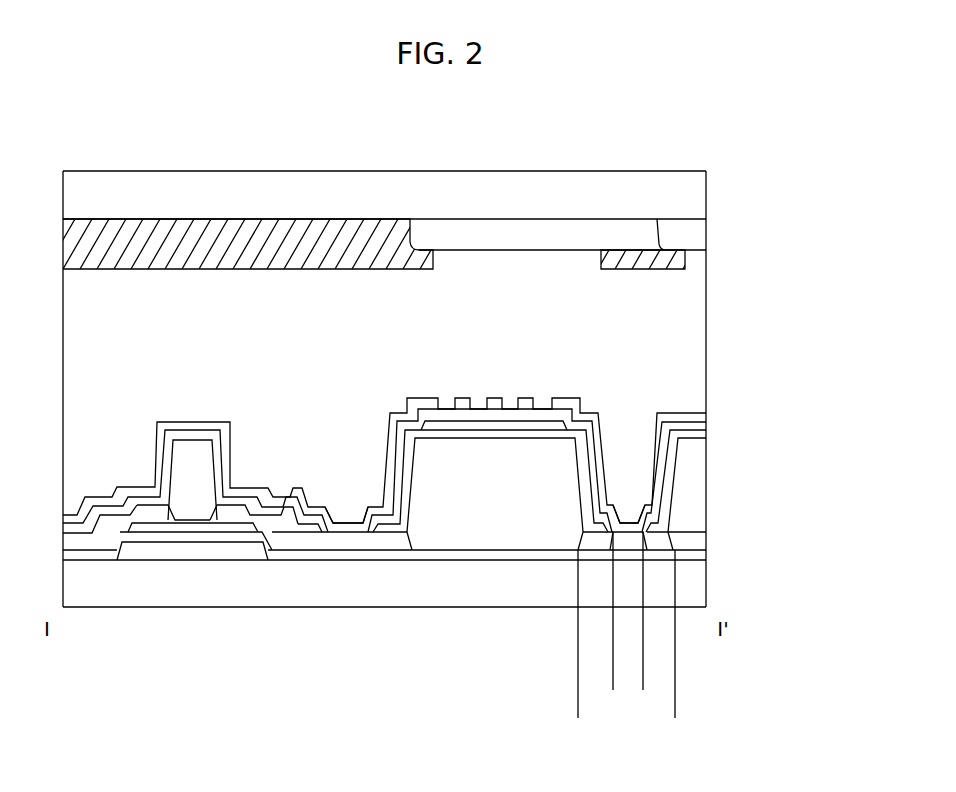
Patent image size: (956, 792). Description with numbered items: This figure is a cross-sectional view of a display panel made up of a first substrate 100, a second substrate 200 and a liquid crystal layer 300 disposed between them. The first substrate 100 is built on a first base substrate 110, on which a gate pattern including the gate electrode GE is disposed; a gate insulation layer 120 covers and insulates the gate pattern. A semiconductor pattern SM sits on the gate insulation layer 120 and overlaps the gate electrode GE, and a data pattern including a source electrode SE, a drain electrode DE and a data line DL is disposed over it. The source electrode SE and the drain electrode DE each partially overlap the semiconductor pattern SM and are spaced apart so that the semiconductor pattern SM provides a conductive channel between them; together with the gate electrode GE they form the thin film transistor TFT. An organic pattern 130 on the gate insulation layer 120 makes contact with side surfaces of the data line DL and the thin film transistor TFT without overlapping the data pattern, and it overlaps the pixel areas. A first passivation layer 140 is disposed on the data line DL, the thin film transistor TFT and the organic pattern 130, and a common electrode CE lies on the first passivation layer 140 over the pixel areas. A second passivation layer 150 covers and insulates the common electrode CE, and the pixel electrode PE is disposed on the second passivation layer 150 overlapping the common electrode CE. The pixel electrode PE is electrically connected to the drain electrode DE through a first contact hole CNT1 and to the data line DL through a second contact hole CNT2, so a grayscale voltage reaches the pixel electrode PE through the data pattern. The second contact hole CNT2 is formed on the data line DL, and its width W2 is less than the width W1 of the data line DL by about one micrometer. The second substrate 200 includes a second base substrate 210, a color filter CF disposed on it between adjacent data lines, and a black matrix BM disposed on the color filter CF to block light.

The second base substrate 210 is at (706, 193).
The color filter CF is at (706, 238).
The black matrix BM is at (686, 259).
The second substrate 200 is at (775, 177).
The liquid crystal layer 300 is at (706, 345).
The first base substrate 110 is at (706, 584).
The gate insulation layer 120 is at (706, 548).
The organic pattern 130 is at (706, 503).
The first passivation layer 140 is at (706, 434).
The second passivation layer 150 is at (706, 423).
The pixel electrode PE is at (688, 415).
The common electrode CE is at (510, 425).
The first contact hole CNT1 is at (360, 520).
The second contact hole CNT2 is at (638, 516).
The data line DL is at (628, 540).
The source electrode SE is at (90, 556).
The gate electrode GE is at (165, 552).
The semiconductor pattern SM is at (222, 530).
The drain electrode DE is at (288, 545).
The thin film transistor TFT is at (305, 670).
The width of the data line W1 is at (578, 710).
The width of the second contact hole W2 is at (613, 679).
The first substrate 100 is at (775, 392).